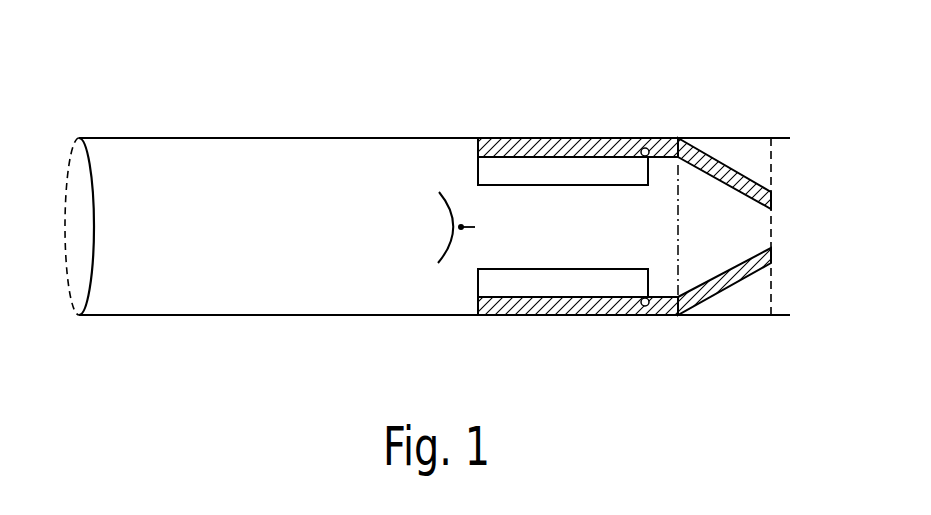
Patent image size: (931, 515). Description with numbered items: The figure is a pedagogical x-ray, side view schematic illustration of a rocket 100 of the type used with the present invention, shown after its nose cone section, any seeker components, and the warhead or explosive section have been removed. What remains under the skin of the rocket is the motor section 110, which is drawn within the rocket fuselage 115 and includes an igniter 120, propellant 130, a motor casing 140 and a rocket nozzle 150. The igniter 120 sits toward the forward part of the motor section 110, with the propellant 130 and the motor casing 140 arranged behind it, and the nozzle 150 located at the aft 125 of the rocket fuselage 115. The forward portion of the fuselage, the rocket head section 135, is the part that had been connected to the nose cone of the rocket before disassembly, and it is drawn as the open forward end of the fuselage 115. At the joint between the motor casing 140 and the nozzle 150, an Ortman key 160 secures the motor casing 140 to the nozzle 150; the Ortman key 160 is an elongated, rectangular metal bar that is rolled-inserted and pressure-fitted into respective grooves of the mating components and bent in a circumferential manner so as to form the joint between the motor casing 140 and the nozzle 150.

The rocket 100 is at (357, 115).
The motor section 110 is at (228, 160).
The rocket fuselage 115 is at (310, 318).
The igniter 120 is at (451, 198).
The aft 125 is at (747, 316).
The propellant 130 is at (567, 168).
The rocket head section 135 is at (77, 300).
The motor casing 140 is at (588, 317).
The rocket nozzle 150 is at (718, 165).
The Ortman key 160 is at (647, 317).